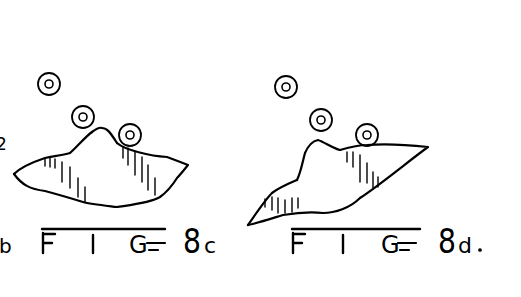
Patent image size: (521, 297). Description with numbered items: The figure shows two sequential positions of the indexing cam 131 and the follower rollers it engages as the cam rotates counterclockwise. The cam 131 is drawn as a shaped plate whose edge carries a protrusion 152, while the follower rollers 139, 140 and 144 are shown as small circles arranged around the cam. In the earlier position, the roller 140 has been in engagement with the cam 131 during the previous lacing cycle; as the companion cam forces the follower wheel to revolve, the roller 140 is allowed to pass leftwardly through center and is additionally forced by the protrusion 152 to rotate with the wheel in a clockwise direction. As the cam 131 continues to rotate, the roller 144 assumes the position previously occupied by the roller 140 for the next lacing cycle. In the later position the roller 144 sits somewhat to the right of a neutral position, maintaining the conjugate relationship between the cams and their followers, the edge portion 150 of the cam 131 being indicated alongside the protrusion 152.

In FIG. 8c, the cam 131 is at (160, 183).
In FIG. 8d, the cam 131 is at (350, 190).
In FIG. 8c, the follower roller 139 is at (55, 75).
In FIG. 8d, the follower roller 139 is at (295, 78).
In FIG. 8c, the roller 140 is at (91, 109).
In FIG. 8d, the roller 140 is at (329, 111).
In FIG. 8c, the roller 144 is at (138, 127).
In FIG. 8d, the roller 144 is at (376, 127).
In FIG. 8c, the blank edge portion 150 is at (67, 153).
In FIG. 8d, the blank edge portion 150 is at (297, 181).
In FIG. 8c, the protrusion 152 is at (104, 130).
In FIG. 8d, the protrusion 152 is at (307, 151).